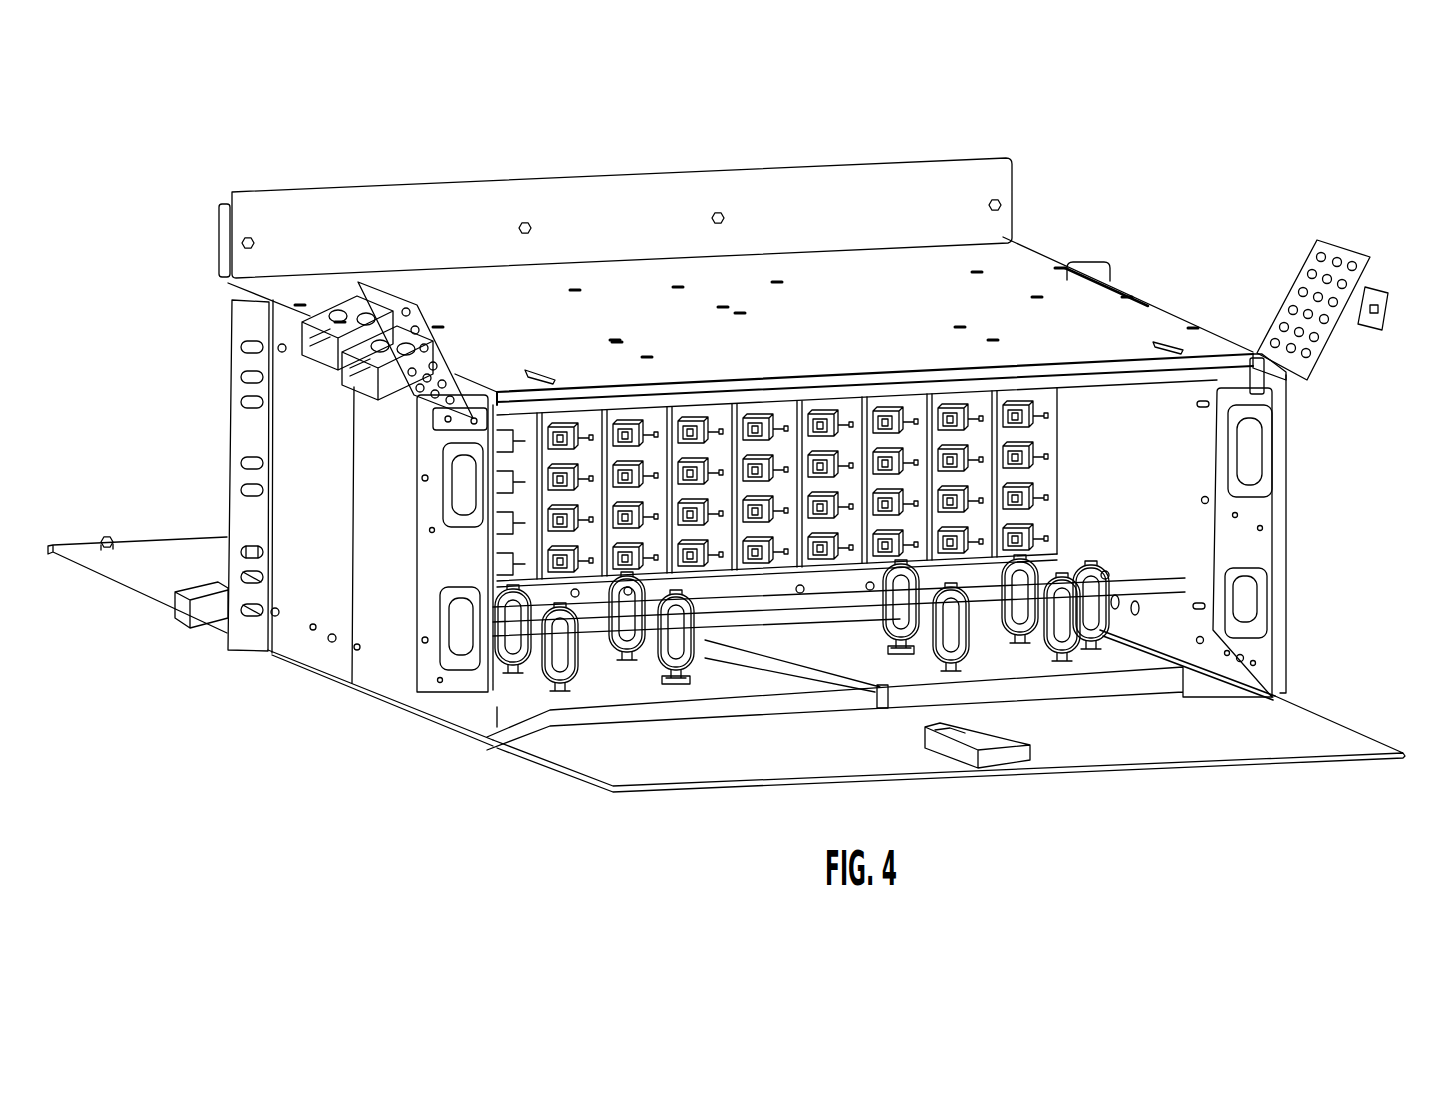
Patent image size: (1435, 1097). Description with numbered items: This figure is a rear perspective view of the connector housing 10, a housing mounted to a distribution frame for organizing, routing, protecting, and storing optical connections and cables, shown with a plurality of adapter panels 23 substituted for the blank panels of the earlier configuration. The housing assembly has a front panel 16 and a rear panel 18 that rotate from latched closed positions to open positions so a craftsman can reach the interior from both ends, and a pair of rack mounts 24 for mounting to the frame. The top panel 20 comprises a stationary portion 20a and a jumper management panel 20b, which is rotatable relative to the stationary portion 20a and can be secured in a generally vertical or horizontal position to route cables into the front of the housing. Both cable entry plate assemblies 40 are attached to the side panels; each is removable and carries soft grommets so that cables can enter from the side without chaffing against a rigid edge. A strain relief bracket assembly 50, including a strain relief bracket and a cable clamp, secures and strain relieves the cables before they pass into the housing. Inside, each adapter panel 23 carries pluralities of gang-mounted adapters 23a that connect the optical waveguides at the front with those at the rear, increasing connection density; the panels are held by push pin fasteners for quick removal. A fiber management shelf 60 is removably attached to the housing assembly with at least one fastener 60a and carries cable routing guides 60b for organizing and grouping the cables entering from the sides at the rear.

The connector housing 10 is at (337, 139).
The front panel 16 is at (147, 562).
The rear panel 18 is at (1257, 747).
The top panel 20 is at (1106, 86).
The stationary portion 20a is at (1013, 268).
The jumper management panel 20b is at (1003, 174).
The adapter panel 23 is at (1040, 530).
The adapter 23a is at (1033, 508).
The rack mount 24 is at (243, 637).
The cable entry plate assembly 40 is at (433, 577).
The strain relief bracket assembly 50 is at (1315, 237).
The fiber management shelf 60 is at (690, 672).
The fastener 60a is at (630, 668).
The cable routing guide 60b is at (888, 645).